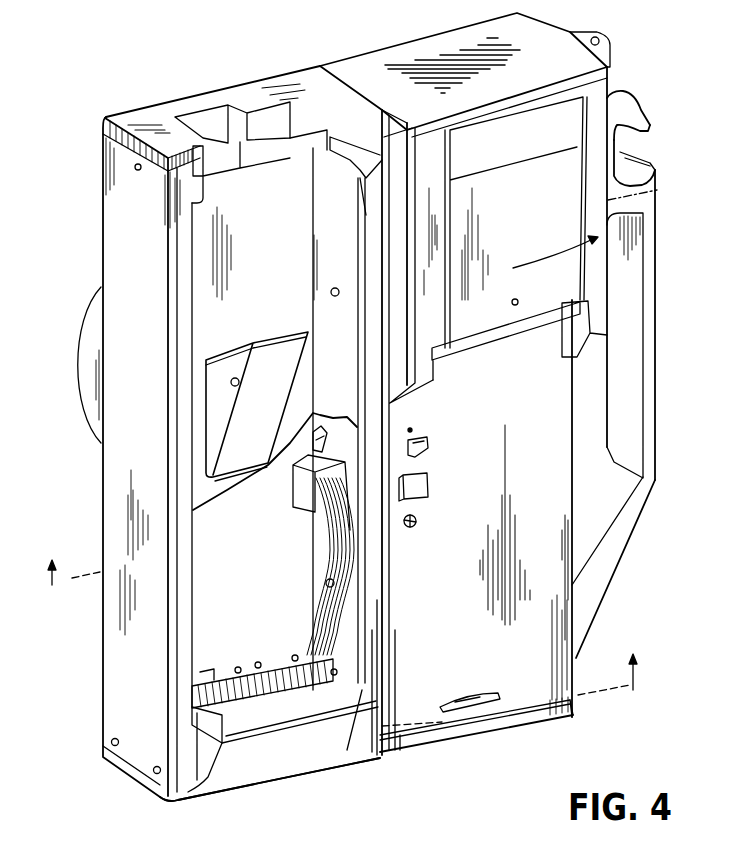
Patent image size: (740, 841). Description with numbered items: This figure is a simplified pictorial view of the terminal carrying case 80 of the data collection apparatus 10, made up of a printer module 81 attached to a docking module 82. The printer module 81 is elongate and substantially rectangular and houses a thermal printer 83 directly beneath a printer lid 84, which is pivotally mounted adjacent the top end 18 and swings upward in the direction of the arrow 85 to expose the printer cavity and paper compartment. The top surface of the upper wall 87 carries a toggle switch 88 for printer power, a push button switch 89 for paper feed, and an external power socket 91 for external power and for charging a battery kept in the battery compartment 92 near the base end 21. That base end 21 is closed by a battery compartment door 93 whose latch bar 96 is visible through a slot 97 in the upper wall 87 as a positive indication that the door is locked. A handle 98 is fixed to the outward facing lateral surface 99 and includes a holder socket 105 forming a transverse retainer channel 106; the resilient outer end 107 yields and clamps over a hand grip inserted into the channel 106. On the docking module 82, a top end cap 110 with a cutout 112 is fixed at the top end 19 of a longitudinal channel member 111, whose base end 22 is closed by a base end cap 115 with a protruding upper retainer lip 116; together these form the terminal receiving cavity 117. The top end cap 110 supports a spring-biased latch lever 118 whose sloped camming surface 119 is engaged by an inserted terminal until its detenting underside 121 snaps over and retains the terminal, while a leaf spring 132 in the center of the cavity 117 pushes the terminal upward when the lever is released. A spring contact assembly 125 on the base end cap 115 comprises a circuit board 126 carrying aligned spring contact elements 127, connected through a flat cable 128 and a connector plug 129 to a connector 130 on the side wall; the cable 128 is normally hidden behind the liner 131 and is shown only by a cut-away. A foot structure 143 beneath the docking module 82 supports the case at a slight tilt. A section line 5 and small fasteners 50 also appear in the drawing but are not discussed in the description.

The data collection apparatus 10 is at (108, 73).
The top end of the docking module 19 is at (148, 117).
The cutout 112 is at (203, 118).
The top end cap 110 is at (267, 80).
The terminal carrying case 80 is at (317, 53).
The top end of the printer module 18 is at (522, 107).
The outer end of the socket 107 is at (641, 115).
The holder socket 105 is at (650, 126).
The transverse retainer channel 106 is at (627, 163).
The latch lever 118 is at (360, 137).
The detenting underside of the latch lever 121 is at (330, 180).
The sloped camming surface 119 is at (380, 162).
The longitudinal channel member 111 is at (112, 240).
The liner 131 is at (200, 240).
The screw 50 is at (330, 292).
The arrow 85 is at (555, 244).
The printer lid 84 is at (650, 278).
The terminal receiving cavity 117 is at (203, 315).
The foot structure 143 is at (88, 368).
The leaf spring 132 is at (245, 410).
The thermal printer 83 is at (522, 323).
The connector 130 is at (350, 470).
The toggle switch 88 is at (432, 443).
The upper wall 87 is at (563, 427).
The connector plug 129 is at (295, 490).
The push button switch 89 is at (430, 485).
The external power socket 91 is at (418, 520).
The printer module 81 is at (560, 497).
The section line 5- 5 is at (342, 641).
The handle 98 is at (625, 550).
The flat cable 128 is at (327, 603).
The docking module 82 is at (112, 620).
The circuit board 126 is at (220, 670).
The spring contact assembly 125 is at (243, 660).
The outward facing lateral surface 99 is at (577, 602).
The spring contact elements 127 is at (207, 678).
The slot 97 is at (463, 700).
The latch bar 96 is at (480, 697).
The protruding upper retainer lip 116 is at (195, 722).
The battery compartment 92 is at (387, 717).
The base end of the printer module 21 is at (542, 723).
The battery compartment door 93 is at (473, 738).
The base end of the docking module 22 is at (258, 780).
The base end cap 115 is at (318, 758).